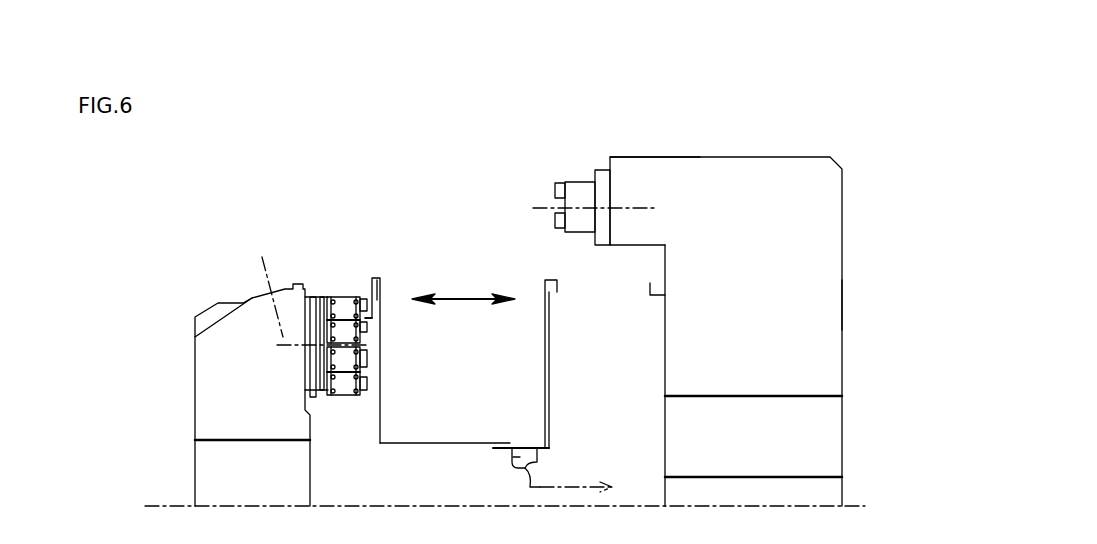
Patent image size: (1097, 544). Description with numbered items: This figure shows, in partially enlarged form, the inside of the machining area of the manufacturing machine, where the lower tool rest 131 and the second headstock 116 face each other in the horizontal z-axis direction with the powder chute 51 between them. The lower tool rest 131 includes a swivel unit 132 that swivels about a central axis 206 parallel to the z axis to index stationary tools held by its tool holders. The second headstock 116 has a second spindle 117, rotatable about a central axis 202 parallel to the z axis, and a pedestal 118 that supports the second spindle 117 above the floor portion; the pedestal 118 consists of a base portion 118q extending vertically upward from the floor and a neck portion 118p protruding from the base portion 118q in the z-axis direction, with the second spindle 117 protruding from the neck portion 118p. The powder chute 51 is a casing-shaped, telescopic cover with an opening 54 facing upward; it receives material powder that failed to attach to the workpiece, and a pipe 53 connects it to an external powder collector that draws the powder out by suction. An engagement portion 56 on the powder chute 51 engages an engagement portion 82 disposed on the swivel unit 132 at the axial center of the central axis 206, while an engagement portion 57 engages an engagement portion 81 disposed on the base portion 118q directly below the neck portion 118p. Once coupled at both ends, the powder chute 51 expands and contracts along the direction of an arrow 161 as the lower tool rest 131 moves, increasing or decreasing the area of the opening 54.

The lower tool rest 131 is at (186, 396).
The central axis 206 is at (305, 289).
The swivel unit 132 is at (344, 385).
The powder chute 51 is at (382, 264).
The engagement portion 56 is at (372, 282).
The opening 54 is at (383, 283).
The engagement portion 82 is at (380, 305).
The arrow 161 is at (465, 295).
The engagement portion 57 is at (555, 292).
The second headstock 116 is at (655, 373).
The pipe 53 is at (512, 462).
The pedestal 118 is at (843, 236).
The neck portion 118p is at (635, 188).
The base portion 118q is at (813, 305).
The engagement portion 81 is at (650, 290).
The second spindle 117 is at (578, 193).
The central axis 202 is at (542, 205).